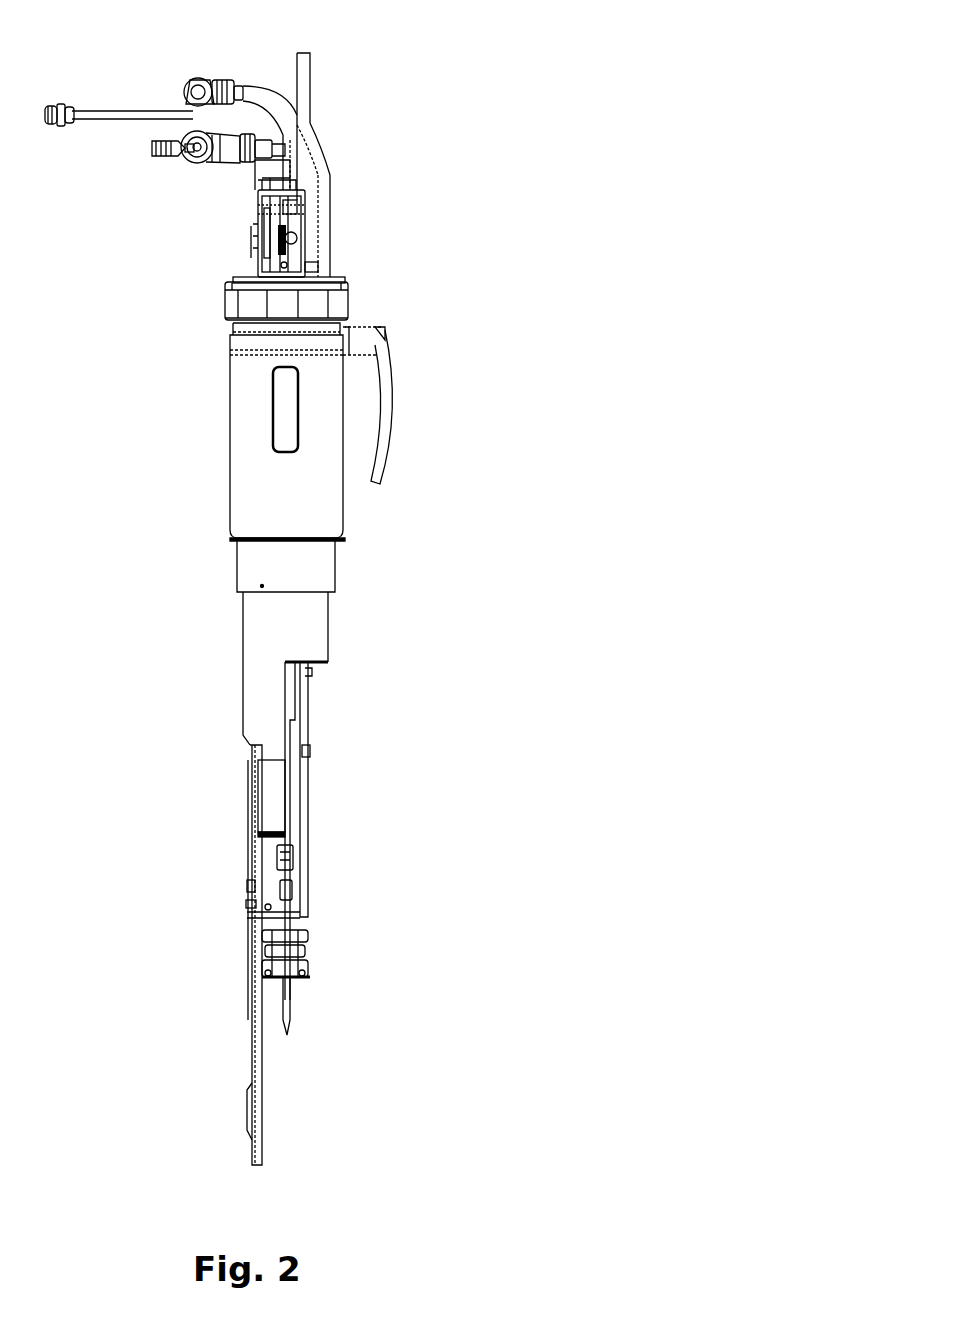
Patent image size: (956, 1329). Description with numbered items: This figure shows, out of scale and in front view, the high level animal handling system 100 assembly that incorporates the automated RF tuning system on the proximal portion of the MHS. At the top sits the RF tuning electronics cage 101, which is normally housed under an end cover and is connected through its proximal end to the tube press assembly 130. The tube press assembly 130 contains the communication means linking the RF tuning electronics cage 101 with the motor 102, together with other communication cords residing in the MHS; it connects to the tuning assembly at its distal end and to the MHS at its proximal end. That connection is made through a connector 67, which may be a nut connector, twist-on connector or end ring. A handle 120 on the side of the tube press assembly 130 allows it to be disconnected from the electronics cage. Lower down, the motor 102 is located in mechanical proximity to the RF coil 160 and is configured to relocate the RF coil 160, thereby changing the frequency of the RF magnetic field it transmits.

The animal handling system 100 is at (513, 84).
The RF tuning electronics cage 101 is at (257, 222).
The connector 67 is at (227, 310).
The tube press assembly 130 is at (245, 447).
The handle 120 is at (388, 418).
The motor 102 is at (308, 955).
The RF coil 160 is at (253, 1063).